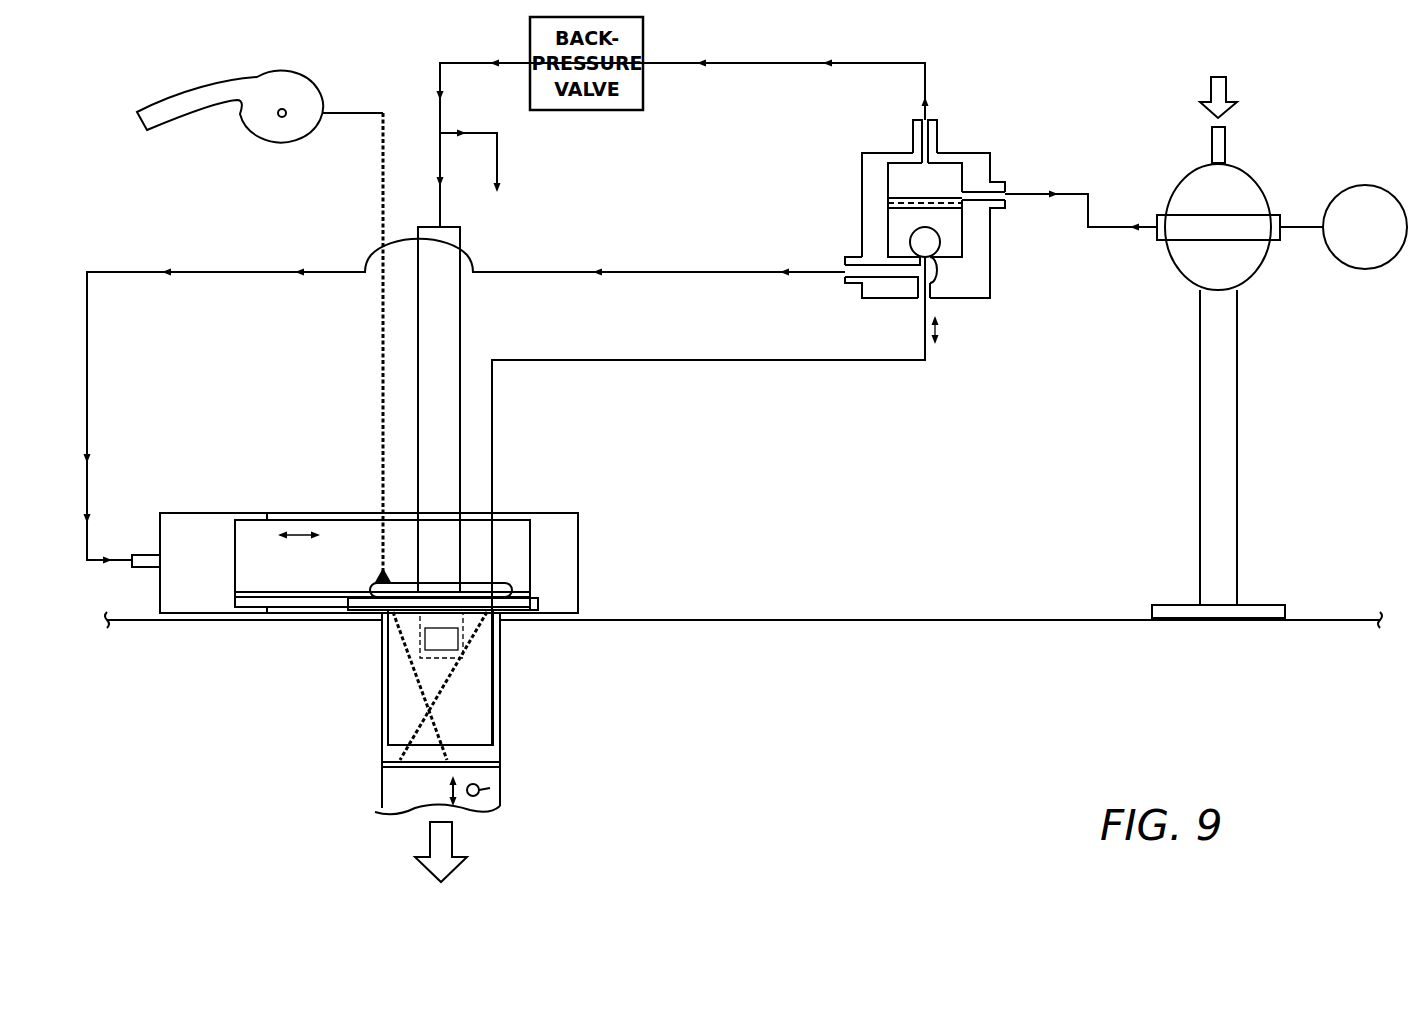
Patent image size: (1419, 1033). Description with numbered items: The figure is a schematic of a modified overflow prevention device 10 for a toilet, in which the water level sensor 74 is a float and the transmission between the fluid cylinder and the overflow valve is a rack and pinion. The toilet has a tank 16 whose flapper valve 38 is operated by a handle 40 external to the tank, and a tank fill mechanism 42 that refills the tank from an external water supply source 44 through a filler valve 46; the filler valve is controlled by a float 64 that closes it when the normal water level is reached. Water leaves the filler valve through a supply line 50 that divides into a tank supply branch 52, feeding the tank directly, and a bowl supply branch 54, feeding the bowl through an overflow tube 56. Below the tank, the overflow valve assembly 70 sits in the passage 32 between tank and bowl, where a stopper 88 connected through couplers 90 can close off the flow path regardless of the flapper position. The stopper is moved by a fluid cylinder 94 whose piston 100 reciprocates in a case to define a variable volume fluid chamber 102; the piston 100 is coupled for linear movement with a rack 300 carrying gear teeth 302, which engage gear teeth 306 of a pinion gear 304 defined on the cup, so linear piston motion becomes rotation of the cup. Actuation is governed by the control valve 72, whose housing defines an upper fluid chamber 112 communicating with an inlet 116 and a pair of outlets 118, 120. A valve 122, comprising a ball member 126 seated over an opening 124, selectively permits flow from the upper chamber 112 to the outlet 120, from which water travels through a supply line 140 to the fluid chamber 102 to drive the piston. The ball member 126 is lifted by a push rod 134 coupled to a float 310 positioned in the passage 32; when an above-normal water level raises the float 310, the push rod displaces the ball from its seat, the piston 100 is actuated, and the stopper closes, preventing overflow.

The overflow prevention device 10 is at (1005, 65).
The tank 16 is at (1350, 621).
The passage 32 is at (386, 808).
The flapper valve 38 is at (378, 572).
The handle 40 is at (245, 78).
The tank fill mechanism 42 is at (1270, 150).
The water supply source 44 is at (1228, 88).
The filler valve 46 is at (1254, 278).
The supply line 50 is at (733, 47).
The tank supply branch 52 is at (497, 157).
The bowl supply branch 54 is at (438, 161).
The overflow tube 56 is at (463, 320).
The float 64 is at (1360, 268).
The overflow valve assembly 70 is at (592, 539).
The control valve 72 is at (997, 290).
The water level sensor 74 is at (496, 810).
The stopper 88 is at (402, 768).
The couplers 90 is at (405, 655).
The fluid cylinder 94 is at (204, 500).
The piston 100 is at (237, 573).
The fluid chamber 102 is at (216, 561).
The upper fluid chamber 112 is at (915, 182).
The inlet 116 is at (1003, 183).
The outlet 118 is at (938, 128).
The outlet 120 is at (857, 289).
The valve 122 is at (890, 240).
The opening 124 is at (947, 250).
The ball member 126 is at (942, 240).
The push rod 134 is at (693, 360).
The supply line 140 is at (205, 273).
The rack 300 is at (237, 598).
The gear teeth 302 is at (273, 603).
The pinion gear 304 is at (552, 607).
The gear teeth 306 is at (525, 606).
The float 310 is at (480, 790).